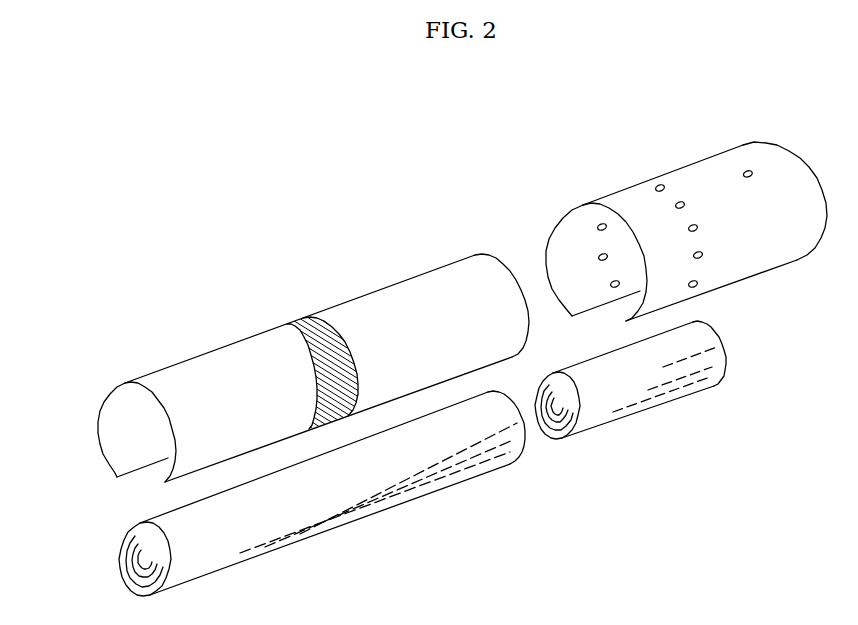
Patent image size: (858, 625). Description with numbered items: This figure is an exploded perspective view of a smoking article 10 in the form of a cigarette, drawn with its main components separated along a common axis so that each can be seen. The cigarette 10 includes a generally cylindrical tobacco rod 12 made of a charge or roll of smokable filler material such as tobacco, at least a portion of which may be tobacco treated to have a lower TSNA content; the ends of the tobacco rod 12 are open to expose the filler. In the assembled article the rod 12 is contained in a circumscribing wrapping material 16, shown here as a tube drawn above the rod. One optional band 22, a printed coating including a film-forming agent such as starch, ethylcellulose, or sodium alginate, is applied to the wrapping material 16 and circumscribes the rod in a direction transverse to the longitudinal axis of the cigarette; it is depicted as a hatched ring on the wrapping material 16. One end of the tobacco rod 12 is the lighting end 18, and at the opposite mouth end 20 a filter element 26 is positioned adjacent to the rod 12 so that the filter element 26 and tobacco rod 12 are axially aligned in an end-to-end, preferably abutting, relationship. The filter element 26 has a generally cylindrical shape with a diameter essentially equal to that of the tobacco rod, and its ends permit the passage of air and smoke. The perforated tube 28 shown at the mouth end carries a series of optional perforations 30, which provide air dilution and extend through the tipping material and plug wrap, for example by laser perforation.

The smoking article 10 is at (313, 351).
The tobacco rod 12 is at (288, 495).
The wrapping material 16 is at (465, 275).
The lighting end 18 is at (108, 572).
The mouth end 20 is at (666, 380).
The band 22 is at (292, 322).
The filter element 26 is at (627, 404).
The perforated tube 28 is at (686, 228).
The perforations 30 is at (704, 258).